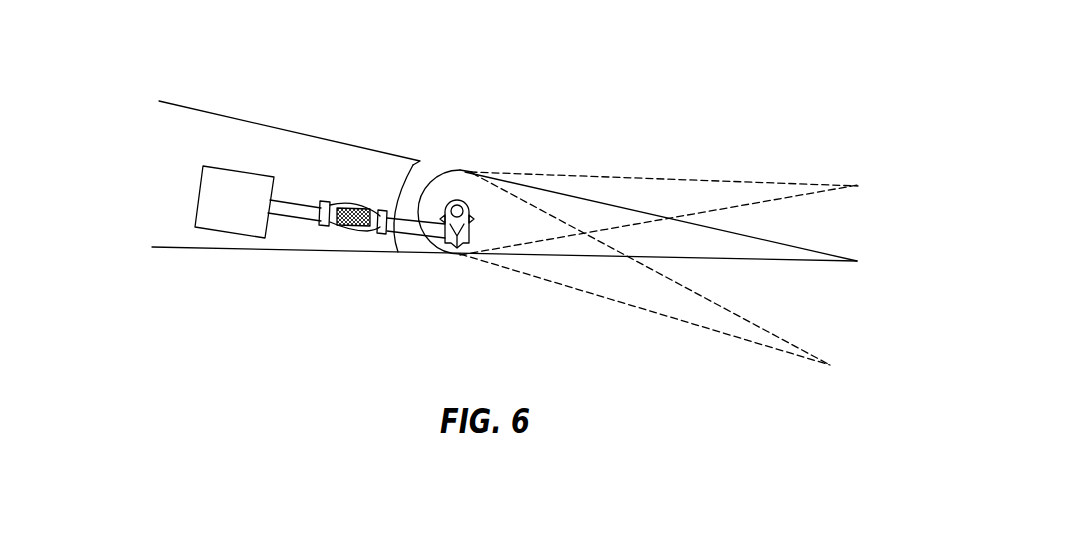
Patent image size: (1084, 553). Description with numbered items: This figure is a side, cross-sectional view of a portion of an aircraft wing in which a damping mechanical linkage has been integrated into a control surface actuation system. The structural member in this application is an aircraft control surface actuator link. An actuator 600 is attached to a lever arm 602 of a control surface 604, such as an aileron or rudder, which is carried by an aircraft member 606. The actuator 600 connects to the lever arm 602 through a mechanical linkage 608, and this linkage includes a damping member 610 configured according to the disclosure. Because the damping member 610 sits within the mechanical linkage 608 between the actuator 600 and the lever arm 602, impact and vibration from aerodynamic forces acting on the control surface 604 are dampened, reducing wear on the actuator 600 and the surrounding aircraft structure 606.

The actuator 600 is at (237, 190).
The lever arm 602 is at (463, 252).
The control surface 604 is at (590, 215).
The aircraft member 606 is at (293, 153).
The mechanical linkage 608 is at (413, 227).
The damping member 610 is at (352, 233).